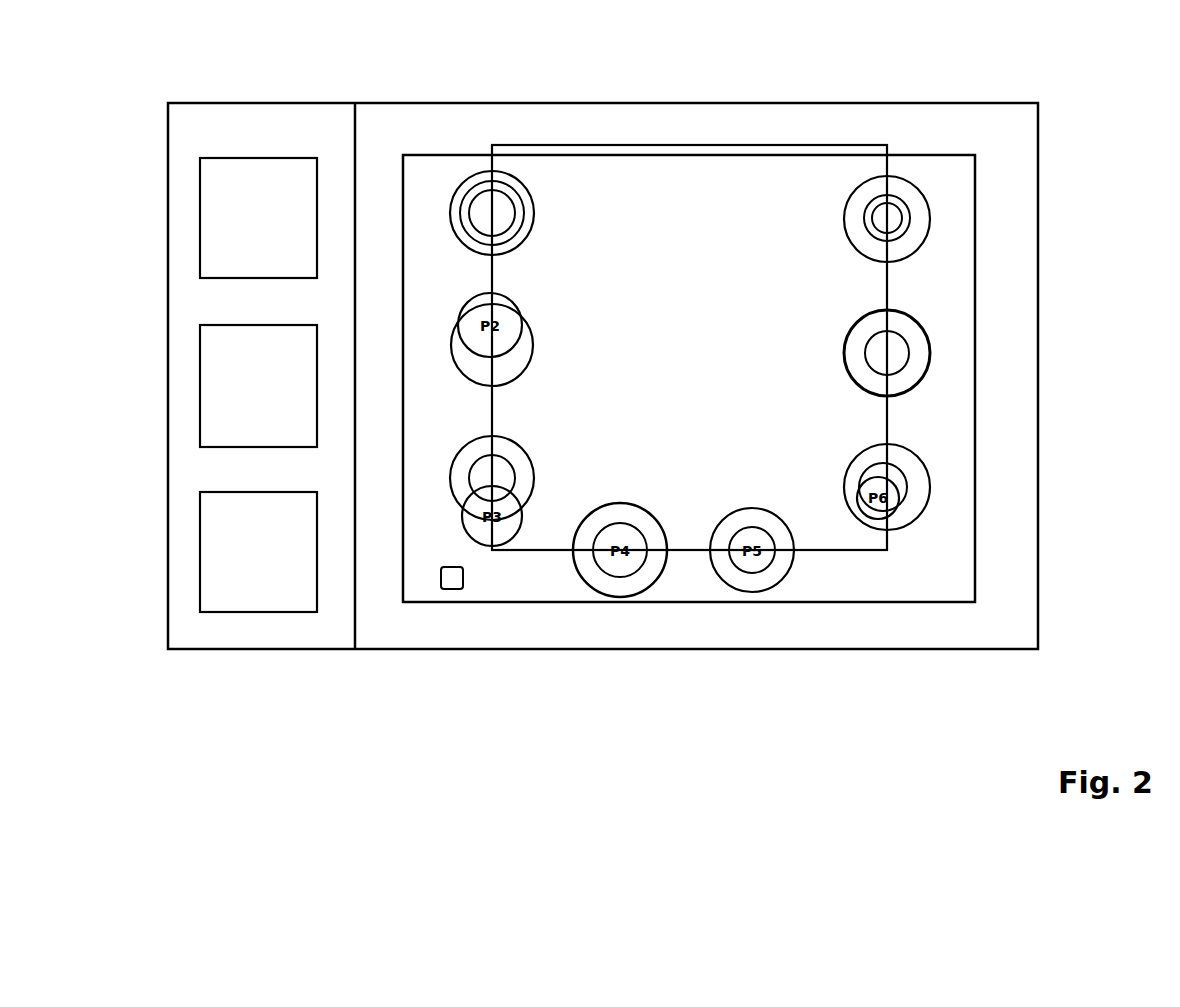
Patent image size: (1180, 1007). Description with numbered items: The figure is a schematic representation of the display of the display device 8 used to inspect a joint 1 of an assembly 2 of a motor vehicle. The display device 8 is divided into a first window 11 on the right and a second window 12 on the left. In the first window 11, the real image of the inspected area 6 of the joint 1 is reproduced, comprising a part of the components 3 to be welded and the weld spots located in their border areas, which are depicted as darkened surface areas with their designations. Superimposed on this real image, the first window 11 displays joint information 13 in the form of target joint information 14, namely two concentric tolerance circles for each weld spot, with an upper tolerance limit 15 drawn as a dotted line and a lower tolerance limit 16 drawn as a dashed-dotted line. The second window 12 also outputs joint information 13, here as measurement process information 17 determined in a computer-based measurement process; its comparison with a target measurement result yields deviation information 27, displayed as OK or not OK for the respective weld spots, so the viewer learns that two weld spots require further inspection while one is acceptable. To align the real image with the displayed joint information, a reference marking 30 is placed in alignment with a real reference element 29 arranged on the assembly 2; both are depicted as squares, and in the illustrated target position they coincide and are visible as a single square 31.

The joint 1 is at (513, 165).
The assembly 2 is at (597, 165).
The component 3 is at (952, 292).
The area of the joint 6 is at (945, 372).
The display device 8 is at (583, 650).
The first window 11 is at (995, 545).
The second window 12 is at (320, 622).
The joint information 13 is at (237, 622).
The target joint information 14 is at (938, 232).
The upper tolerance limit 15 is at (897, 162).
The lower tolerance limit 16 is at (858, 208).
The measurement process information 17 is at (225, 572).
The deviation information 27 is at (225, 522).
The reference element 29 is at (478, 586).
The reference marking 30 is at (430, 612).
The square 31 is at (452, 590).